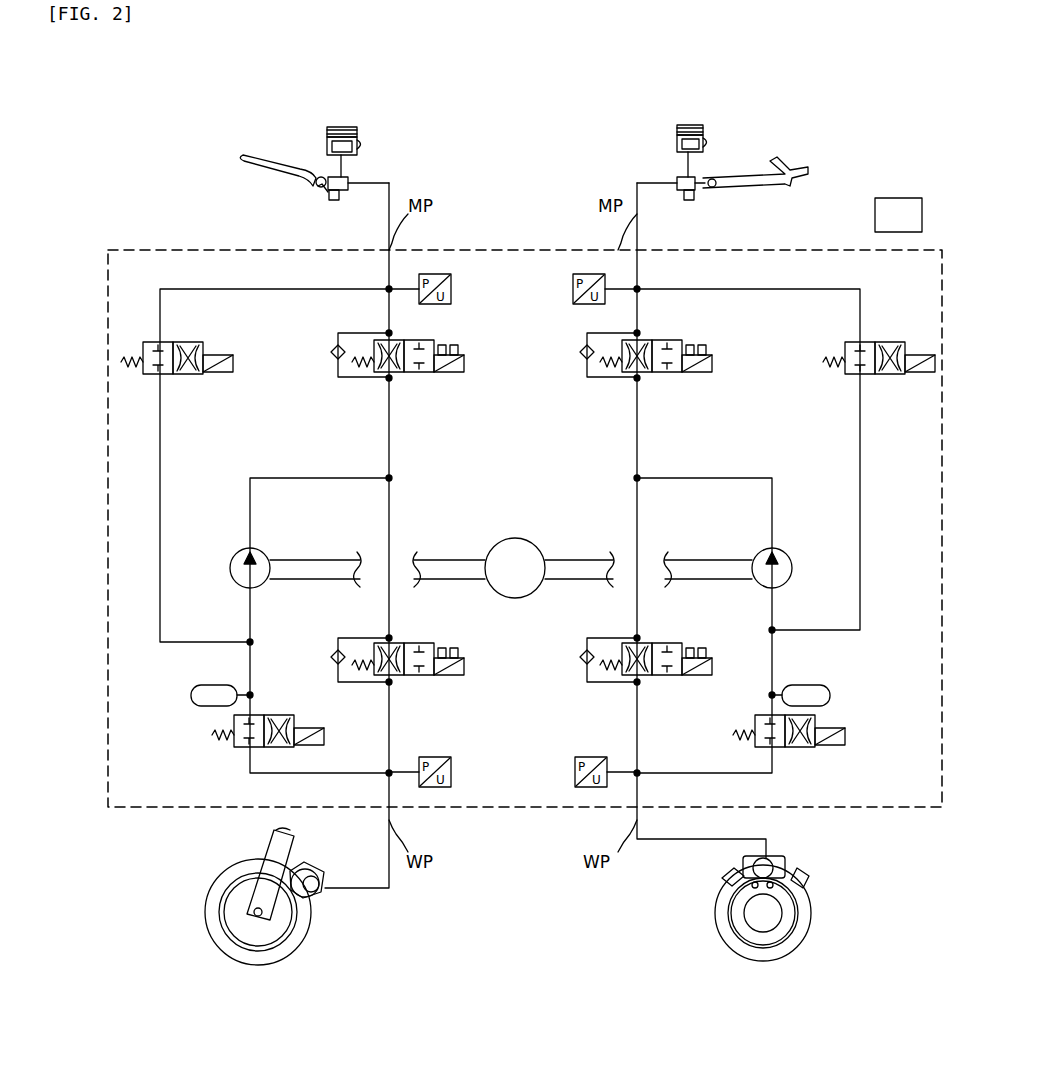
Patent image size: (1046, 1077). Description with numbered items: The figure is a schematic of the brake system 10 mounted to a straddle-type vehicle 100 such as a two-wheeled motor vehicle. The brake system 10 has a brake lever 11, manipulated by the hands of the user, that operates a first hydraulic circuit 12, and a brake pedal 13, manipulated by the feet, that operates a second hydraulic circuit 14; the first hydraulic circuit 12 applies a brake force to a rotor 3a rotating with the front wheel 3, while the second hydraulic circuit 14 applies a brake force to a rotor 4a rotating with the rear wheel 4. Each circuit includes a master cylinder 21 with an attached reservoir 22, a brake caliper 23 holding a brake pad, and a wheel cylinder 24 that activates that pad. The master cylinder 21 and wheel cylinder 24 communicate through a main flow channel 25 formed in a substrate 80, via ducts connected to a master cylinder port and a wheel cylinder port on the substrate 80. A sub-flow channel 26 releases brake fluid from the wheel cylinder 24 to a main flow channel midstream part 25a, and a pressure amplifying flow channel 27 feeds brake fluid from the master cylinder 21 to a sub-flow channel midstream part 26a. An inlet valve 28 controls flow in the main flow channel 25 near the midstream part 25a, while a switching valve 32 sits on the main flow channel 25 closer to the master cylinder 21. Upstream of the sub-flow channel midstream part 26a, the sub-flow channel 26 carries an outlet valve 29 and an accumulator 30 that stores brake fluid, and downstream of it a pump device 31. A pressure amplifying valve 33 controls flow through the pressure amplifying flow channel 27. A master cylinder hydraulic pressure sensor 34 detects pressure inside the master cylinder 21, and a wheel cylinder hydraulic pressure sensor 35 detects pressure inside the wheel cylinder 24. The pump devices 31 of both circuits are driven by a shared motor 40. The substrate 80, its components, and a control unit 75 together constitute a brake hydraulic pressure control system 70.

The straddle-type vehicle 100 is at (912, 66).
The brake system 10 is at (167, 148).
The brake lever 11 is at (253, 158).
The first hydraulic circuit 12 is at (430, 112).
The brake pedal 13 is at (785, 164).
The second hydraulic circuit 14 is at (580, 112).
The master cylinder 21 is at (344, 194).
The reservoir 22 is at (345, 128).
The brake caliper 23 is at (308, 874).
The wheel cylinder 24 is at (318, 882).
The main flow channel 25 is at (384, 435).
The main flow channel midstream part 25a is at (392, 480).
The sub-flow channel 26 is at (282, 478).
The sub-flow channel midstream part 26a is at (248, 642).
The pressure amplifying flow channel 27 is at (254, 290).
The inlet valve 28 is at (424, 677).
The outlet valve 29 is at (285, 716).
The accumulator 30 is at (220, 686).
The pump device 31 is at (268, 586).
The switching valve 32 is at (450, 373).
The pressure amplifying valve 33 is at (208, 372).
The master cylinder hydraulic pressure sensor 34 is at (453, 289).
The wheel cylinder hydraulic pressure sensor 35 is at (453, 772).
The motor 40 is at (522, 598).
The brake hydraulic pressure control system 70 is at (861, 192).
The control unit 75 is at (915, 198).
The substrate 80 is at (149, 248).
The front wheel 3 is at (320, 937).
The rotor 3a is at (234, 946).
The rear wheel 4 is at (735, 925).
The rotor 4a is at (799, 948).